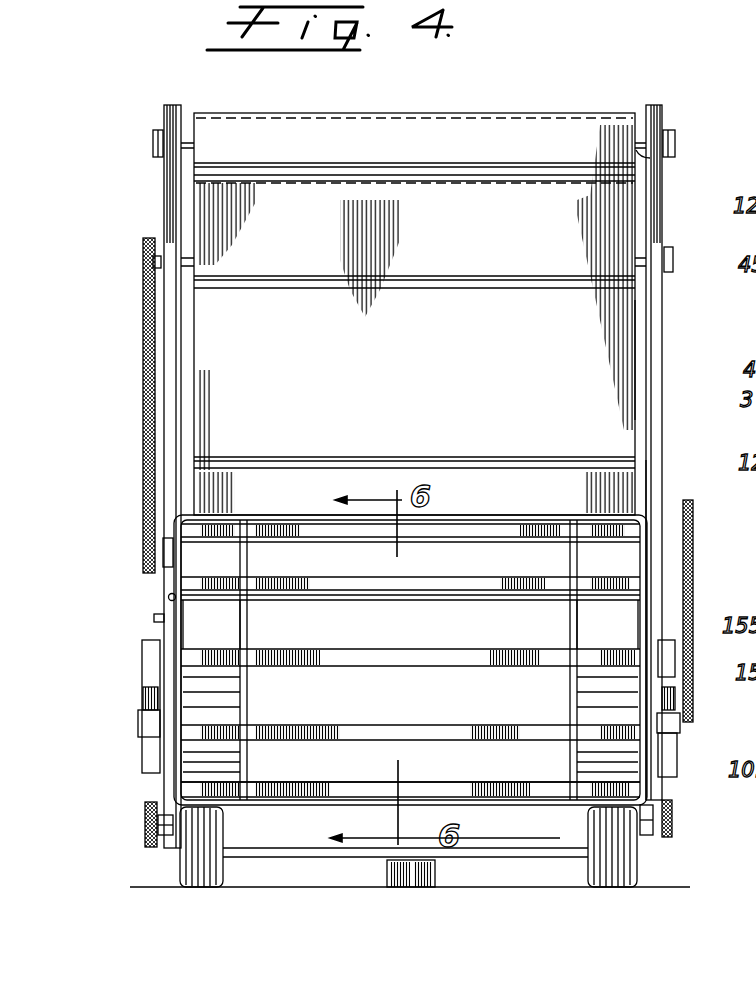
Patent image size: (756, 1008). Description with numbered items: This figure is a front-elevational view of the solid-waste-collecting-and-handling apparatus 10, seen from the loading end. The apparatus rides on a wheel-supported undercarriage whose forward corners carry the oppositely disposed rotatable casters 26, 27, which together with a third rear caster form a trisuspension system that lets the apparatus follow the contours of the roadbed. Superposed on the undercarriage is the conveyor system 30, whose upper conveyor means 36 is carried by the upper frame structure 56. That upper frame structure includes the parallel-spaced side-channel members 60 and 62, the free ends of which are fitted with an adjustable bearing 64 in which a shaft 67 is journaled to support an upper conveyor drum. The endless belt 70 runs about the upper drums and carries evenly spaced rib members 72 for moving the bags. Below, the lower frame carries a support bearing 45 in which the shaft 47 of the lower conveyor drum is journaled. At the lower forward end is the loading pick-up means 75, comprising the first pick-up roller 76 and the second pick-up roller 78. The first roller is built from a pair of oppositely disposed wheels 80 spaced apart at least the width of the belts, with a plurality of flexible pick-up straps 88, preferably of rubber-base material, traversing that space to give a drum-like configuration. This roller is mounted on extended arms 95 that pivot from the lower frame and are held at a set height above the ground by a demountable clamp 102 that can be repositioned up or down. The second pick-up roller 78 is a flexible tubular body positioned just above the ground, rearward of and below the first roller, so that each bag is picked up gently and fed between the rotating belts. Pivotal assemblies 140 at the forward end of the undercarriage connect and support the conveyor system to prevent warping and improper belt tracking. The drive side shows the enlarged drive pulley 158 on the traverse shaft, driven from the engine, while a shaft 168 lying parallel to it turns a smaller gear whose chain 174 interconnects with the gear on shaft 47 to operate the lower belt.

The solid-waste-collecting-and-handling apparatus 10 is at (608, 95).
The caster 26 is at (630, 872).
The caster 27 is at (195, 862).
The conveyor system 30 is at (495, 140).
The upper conveyor means 36 is at (381, 357).
The support bearing 45 is at (672, 262).
The shaft 47 is at (148, 258).
The upper frame structure 56 is at (660, 387).
The side-channel member 60 is at (657, 490).
The side-channel member 62 is at (167, 190).
The adjustable bearing 64 is at (155, 145).
The shaft 67 is at (650, 158).
The endless belt 70 is at (600, 347).
The rib member 72 is at (510, 280).
The loading pick-up means 75 is at (152, 617).
The first pick-up roller 76 is at (168, 598).
The second pick-up roller 78 is at (350, 824).
The wheel 80 is at (198, 632).
The flexible pick-up strap 88 is at (397, 662).
The extended arm 95 is at (150, 753).
The demountable clamp 102 is at (135, 723).
The pivotal assembly 140 is at (707, 677).
The enlarged drive pulley 158 is at (719, 611).
The shaft 168 is at (152, 546).
The chain 174 is at (145, 392).